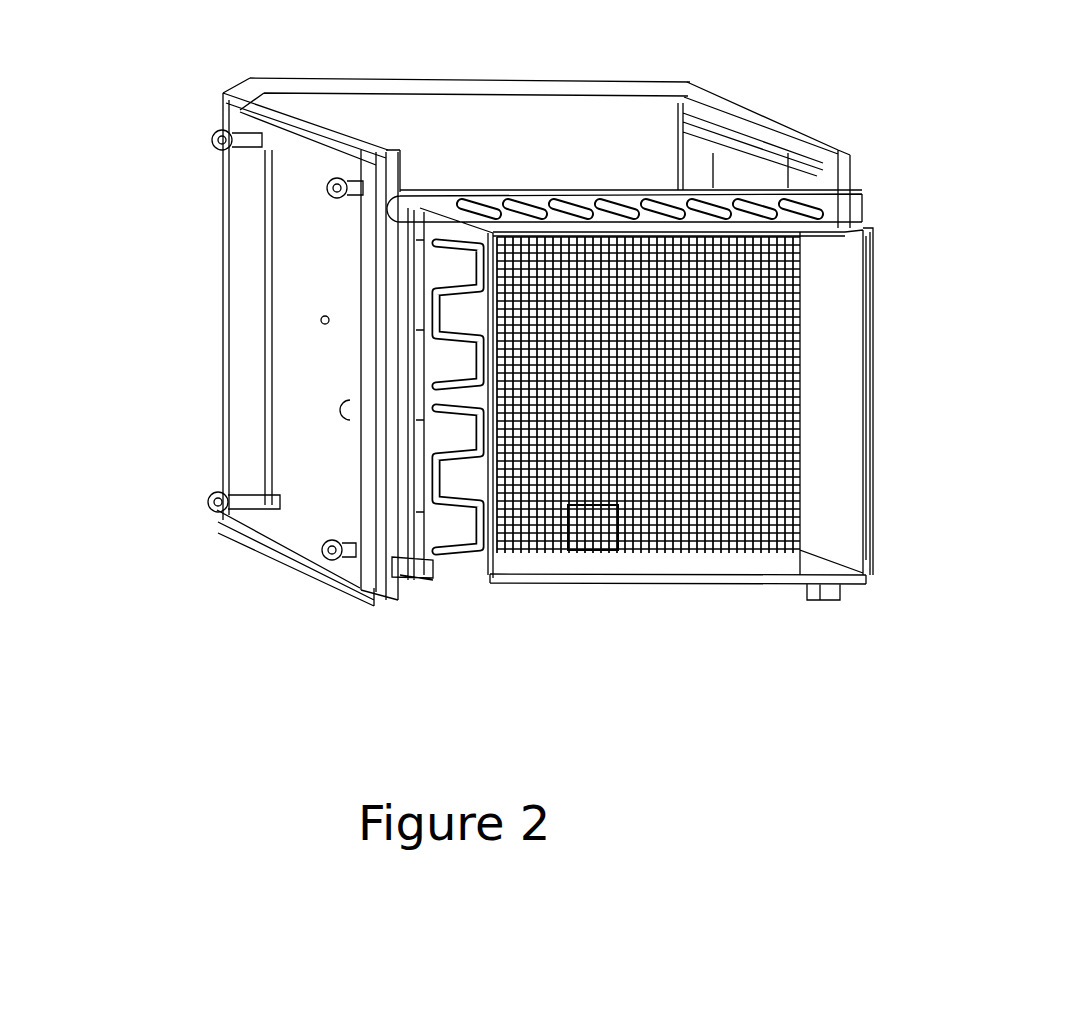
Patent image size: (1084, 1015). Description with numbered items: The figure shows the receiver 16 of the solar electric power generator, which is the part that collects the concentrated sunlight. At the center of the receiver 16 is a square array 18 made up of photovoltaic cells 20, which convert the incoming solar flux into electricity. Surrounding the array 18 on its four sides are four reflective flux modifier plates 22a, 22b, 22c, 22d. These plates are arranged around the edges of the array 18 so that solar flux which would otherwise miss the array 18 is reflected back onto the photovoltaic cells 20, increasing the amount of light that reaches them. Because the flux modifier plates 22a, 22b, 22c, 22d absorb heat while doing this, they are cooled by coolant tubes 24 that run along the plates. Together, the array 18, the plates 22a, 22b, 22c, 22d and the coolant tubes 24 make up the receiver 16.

The receiver 16 is at (172, 626).
The square array 18 is at (679, 565).
The photovoltaic cells 20 is at (800, 462).
The reflective flux modifier plate 22a is at (532, 200).
The reflective flux modifier plate 22b is at (544, 584).
The reflective flux modifier plate 22c is at (468, 578).
The reflective flux modifier plate 22d is at (872, 320).
The coolant tubes 24 is at (757, 205).